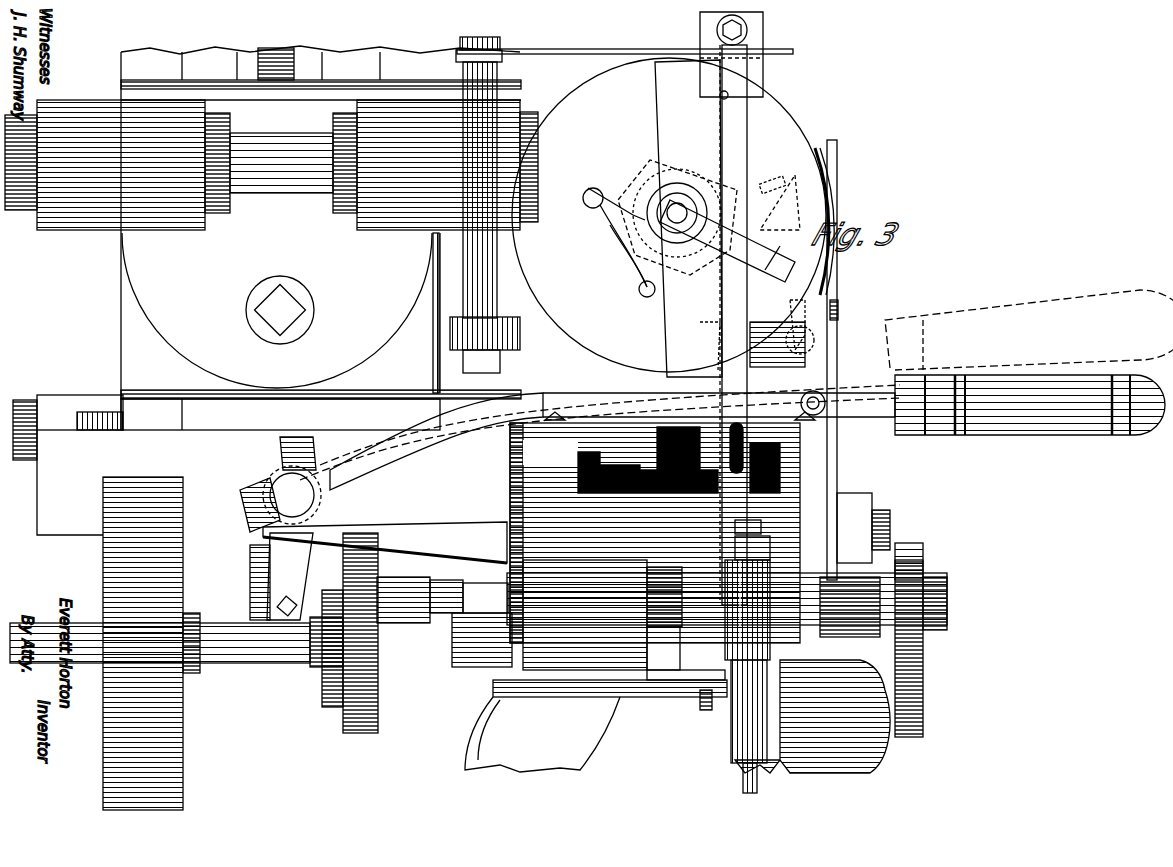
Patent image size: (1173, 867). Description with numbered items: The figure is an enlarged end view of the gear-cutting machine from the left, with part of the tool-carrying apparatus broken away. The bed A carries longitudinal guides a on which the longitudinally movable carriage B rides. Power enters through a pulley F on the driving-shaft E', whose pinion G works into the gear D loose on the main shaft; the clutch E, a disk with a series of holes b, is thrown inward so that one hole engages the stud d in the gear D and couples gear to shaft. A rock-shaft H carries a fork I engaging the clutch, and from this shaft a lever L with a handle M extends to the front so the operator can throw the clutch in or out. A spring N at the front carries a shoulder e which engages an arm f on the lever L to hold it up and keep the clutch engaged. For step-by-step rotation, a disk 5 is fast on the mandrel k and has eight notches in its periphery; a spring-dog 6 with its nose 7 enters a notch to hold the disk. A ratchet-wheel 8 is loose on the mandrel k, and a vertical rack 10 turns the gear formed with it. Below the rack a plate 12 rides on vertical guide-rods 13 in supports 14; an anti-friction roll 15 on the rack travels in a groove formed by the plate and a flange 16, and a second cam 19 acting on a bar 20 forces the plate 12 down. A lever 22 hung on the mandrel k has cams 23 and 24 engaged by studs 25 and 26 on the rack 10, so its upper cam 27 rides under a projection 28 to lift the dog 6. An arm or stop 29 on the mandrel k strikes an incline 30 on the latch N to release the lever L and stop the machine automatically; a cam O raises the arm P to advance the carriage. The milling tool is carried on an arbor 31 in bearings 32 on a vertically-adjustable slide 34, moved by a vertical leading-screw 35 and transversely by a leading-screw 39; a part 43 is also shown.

The disk 5 is at (669, 215).
The spring-dog 6 is at (621, 202).
The nose 7 is at (681, 218).
The ratchet-wheel 8 is at (632, 165).
The vertical rack 10 is at (734, 325).
The plate 12 is at (747, 609).
The vertical guide-rods 13 is at (728, 741).
The supports 14 is at (749, 711).
The anti-friction roll 15 is at (752, 548).
The flange 16 is at (748, 521).
The second cam 19 is at (601, 615).
The bar 20 is at (596, 721).
The lever 22 is at (684, 130).
The cam 23 is at (714, 346).
The cam 24 is at (713, 88).
The stud 25 is at (737, 314).
The stud 26 is at (732, 101).
The cam 27 is at (674, 75).
The projection 28 is at (690, 58).
The arm or stop 29 is at (727, 241).
The incline 30 is at (796, 221).
The arbor 31 is at (281, 163).
The bearings 32 is at (271, 165).
The vertically-adjustable slide 34 is at (321, 241).
The vertical leading-screw 35 is at (320, 63).
The transverse leading-screw 39 is at (68, 465).
The collar 43 is at (664, 597).
The longitudinal guides a is at (680, 423).
The holes b is at (731, 54).
The stud d is at (727, 605).
The shoulder e is at (837, 299).
The arm f is at (783, 333).
The mandrel k is at (677, 217).
The bed A is at (655, 533).
The carriage B is at (679, 458).
The gear D is at (444, 608).
The clutch E is at (321, 648).
The driving-shaft E' is at (160, 643).
The pulley F is at (143, 643).
The pinion G is at (378, 665).
The rock-shaft H is at (373, 500).
The fork I is at (281, 576).
The lever L is at (600, 437).
The handle M is at (1029, 362).
The spring N is at (837, 360).
The cam O is at (837, 666).
The arm P is at (886, 536).